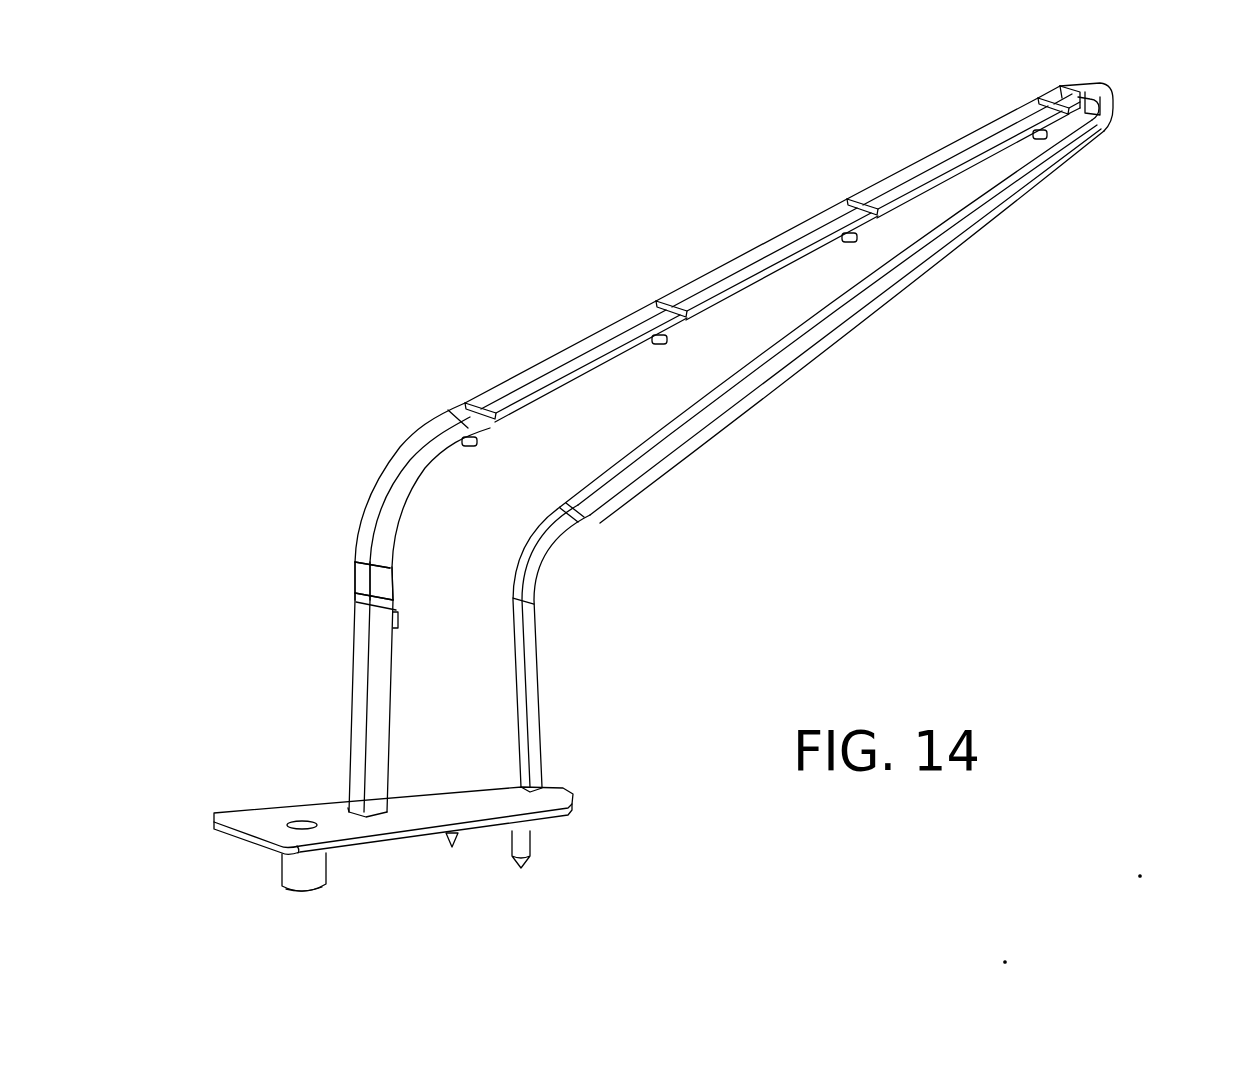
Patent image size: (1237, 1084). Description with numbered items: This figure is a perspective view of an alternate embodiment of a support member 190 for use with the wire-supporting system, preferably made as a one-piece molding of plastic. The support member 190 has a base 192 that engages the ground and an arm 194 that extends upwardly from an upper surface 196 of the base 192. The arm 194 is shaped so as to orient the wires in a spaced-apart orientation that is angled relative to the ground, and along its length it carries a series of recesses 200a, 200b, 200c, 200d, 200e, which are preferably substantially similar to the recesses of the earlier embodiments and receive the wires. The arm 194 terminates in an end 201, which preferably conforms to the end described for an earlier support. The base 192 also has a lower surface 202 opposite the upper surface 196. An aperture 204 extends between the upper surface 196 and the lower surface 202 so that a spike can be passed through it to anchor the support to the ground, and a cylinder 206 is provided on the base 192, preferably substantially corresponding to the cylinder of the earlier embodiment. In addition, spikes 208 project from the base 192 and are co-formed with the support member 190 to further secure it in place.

The support member 190 is at (782, 450).
The base 192 is at (430, 835).
The arm 194 is at (723, 350).
The upper surface 196 is at (541, 795).
The recess 200a is at (342, 605).
The recess 200b is at (442, 393).
The recess 200c is at (633, 294).
The recess 200d is at (828, 196).
The recess 200e is at (1013, 93).
The end 201 is at (1140, 99).
The lower surface 202 is at (390, 850).
The aperture 204 is at (300, 822).
The cylinder 206 is at (315, 873).
The spikes 208 is at (534, 838).